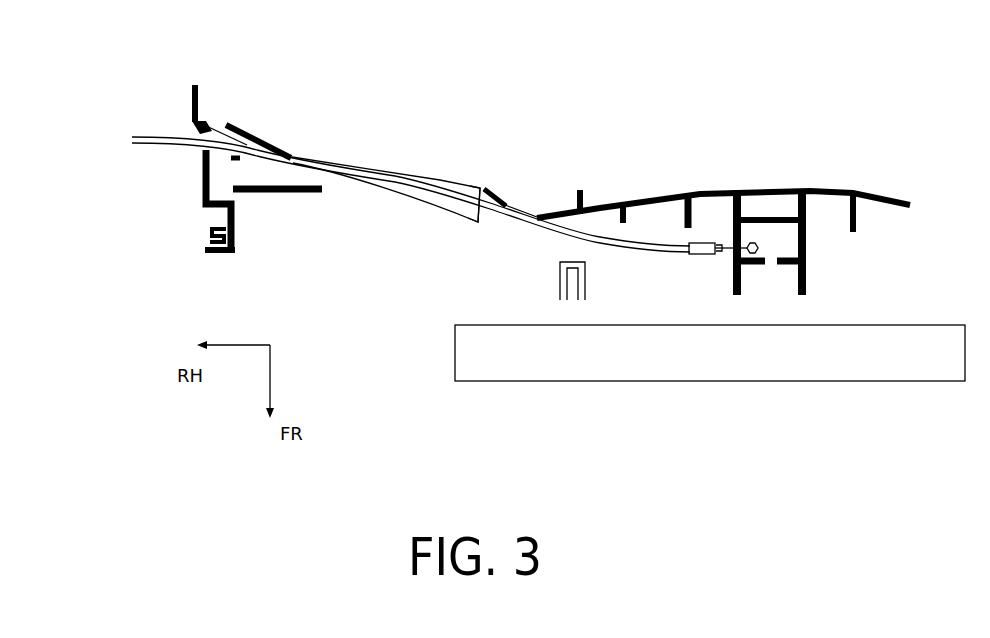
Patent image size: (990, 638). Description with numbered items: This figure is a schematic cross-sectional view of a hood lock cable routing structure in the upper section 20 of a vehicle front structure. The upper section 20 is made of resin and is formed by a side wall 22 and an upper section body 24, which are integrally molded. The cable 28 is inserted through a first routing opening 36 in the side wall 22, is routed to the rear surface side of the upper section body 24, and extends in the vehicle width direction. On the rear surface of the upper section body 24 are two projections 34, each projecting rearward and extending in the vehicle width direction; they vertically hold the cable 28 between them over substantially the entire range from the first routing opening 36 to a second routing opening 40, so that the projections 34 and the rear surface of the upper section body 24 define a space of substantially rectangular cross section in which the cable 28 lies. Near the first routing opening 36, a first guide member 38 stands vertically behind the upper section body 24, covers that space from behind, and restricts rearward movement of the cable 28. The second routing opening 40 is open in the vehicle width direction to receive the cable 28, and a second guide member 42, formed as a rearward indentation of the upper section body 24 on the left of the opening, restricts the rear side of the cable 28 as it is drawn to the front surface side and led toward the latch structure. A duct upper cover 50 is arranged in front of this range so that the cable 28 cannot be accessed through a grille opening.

The upper section 20 is at (234, 79).
The side wall 22 is at (198, 197).
The upper section body 24 is at (292, 194).
The cable 28 is at (142, 133).
The projections 34 is at (358, 168).
The first routing opening 36 is at (192, 147).
The first guide member 38 is at (262, 140).
The second routing opening 40 is at (464, 182).
The second guide member 42 is at (503, 190).
The duct upper cover 50 is at (533, 362).